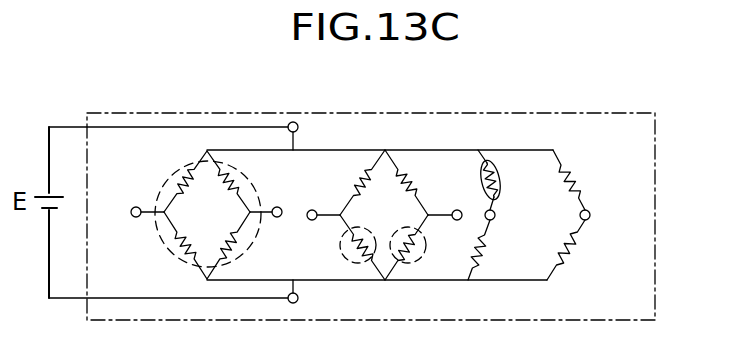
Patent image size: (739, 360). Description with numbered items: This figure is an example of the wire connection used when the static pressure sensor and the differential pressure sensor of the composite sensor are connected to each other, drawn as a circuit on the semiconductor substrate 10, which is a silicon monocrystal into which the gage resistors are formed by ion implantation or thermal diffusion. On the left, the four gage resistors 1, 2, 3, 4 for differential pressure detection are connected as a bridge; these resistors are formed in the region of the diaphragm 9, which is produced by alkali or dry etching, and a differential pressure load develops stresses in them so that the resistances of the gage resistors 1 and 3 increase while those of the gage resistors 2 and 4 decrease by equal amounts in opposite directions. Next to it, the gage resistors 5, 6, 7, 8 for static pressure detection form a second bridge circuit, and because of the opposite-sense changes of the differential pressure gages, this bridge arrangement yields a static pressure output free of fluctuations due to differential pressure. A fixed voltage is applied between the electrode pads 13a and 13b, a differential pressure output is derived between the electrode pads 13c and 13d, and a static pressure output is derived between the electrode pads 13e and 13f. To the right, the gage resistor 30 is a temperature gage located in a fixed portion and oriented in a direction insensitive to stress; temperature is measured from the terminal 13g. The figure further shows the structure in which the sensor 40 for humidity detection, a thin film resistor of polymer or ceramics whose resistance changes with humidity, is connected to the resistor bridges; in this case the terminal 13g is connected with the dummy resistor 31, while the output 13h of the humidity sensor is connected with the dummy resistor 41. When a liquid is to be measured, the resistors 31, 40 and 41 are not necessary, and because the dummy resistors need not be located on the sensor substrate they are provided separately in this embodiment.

The gage resistor 1 is at (174, 182).
The gage resistor 2 is at (176, 248).
The gage resistor 3 is at (240, 248).
The gage resistor 4 is at (238, 190).
The gage resistor 5 is at (363, 172).
The gage resistor 6 is at (353, 264).
The gage resistor 7 is at (417, 245).
The gage resistor 8 is at (411, 175).
The diaphragm 9 is at (176, 162).
The semiconductor substrate 10 is at (538, 112).
The electrode pad 13a is at (290, 122).
The electrode pad 13b is at (297, 306).
The electrode pad 13c is at (132, 217).
The electrode pad 13d is at (277, 220).
The electrode pad 13e is at (308, 211).
The electrode pad 13f is at (454, 210).
The terminal 13g is at (494, 220).
The output of humidity sensor 13h is at (589, 220).
The gage resistor 30 is at (502, 176).
The dummy resistor 31 is at (488, 248).
The humidity sensor 40 is at (577, 178).
The dummy resistor 41 is at (569, 257).